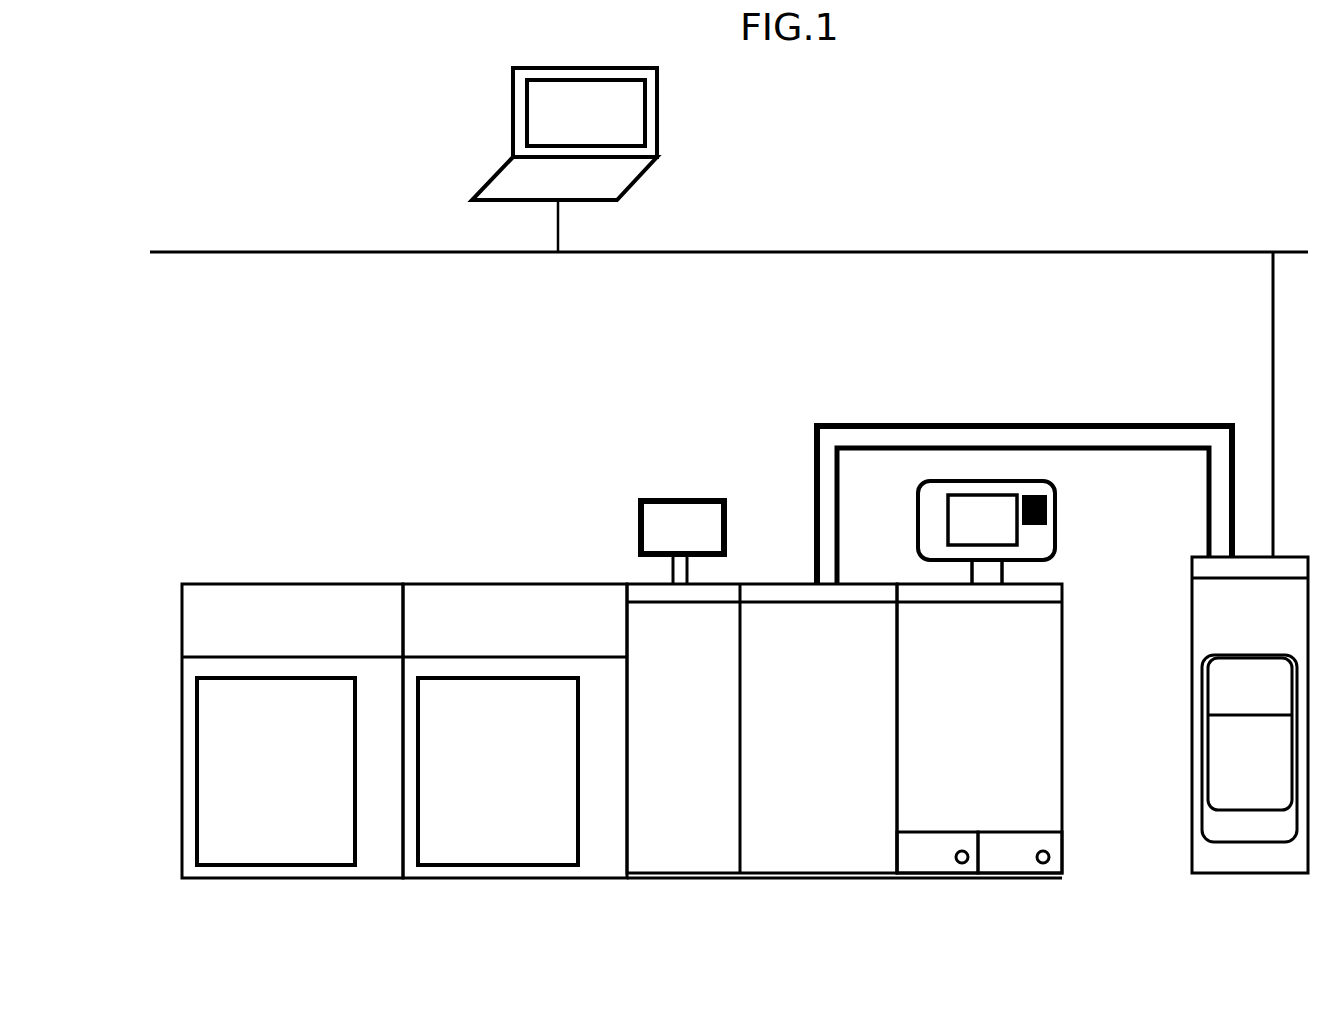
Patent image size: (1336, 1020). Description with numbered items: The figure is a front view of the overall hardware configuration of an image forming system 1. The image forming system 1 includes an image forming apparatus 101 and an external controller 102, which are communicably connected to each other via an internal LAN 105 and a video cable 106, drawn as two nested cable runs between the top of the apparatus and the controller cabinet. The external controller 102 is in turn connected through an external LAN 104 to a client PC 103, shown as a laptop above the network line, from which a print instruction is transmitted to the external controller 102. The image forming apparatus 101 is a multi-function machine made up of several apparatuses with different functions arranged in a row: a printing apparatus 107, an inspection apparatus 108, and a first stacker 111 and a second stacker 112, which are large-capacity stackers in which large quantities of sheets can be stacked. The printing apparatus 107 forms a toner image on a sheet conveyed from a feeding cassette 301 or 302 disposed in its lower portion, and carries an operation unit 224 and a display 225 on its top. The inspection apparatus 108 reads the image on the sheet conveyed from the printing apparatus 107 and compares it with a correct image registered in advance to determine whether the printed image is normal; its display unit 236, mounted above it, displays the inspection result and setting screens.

The image forming system 1 is at (82, 434).
The image forming apparatus 101 is at (268, 514).
The external controller 102 is at (1222, 875).
The client PC 103 is at (513, 115).
The external LAN 104 is at (873, 252).
The internal LAN 105 is at (1097, 448).
The video cable 106 is at (1128, 426).
The printing apparatus 107 is at (932, 880).
The inspection apparatus 108 is at (668, 880).
The first stacker 111 is at (462, 880).
The second stacker 112 is at (255, 880).
The operation unit 224 is at (1047, 505).
The display 225 is at (952, 527).
The display unit 236 is at (681, 498).
The feeding cassette 301 is at (932, 832).
The feeding cassette 302 is at (1008, 832).